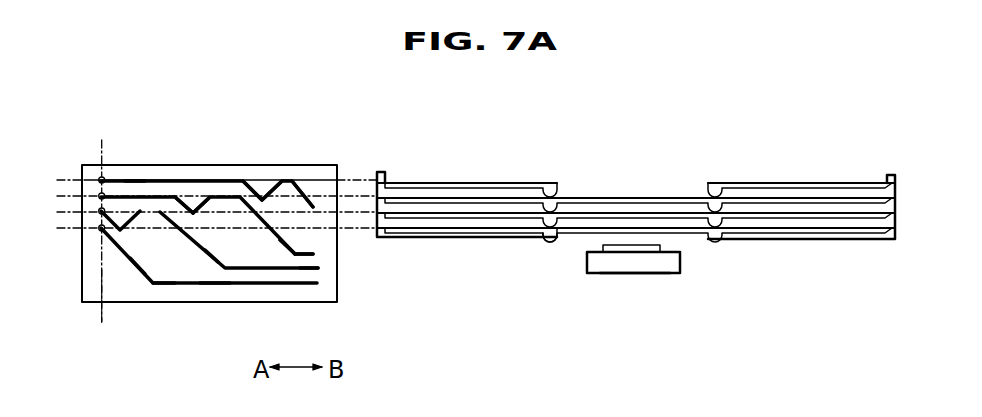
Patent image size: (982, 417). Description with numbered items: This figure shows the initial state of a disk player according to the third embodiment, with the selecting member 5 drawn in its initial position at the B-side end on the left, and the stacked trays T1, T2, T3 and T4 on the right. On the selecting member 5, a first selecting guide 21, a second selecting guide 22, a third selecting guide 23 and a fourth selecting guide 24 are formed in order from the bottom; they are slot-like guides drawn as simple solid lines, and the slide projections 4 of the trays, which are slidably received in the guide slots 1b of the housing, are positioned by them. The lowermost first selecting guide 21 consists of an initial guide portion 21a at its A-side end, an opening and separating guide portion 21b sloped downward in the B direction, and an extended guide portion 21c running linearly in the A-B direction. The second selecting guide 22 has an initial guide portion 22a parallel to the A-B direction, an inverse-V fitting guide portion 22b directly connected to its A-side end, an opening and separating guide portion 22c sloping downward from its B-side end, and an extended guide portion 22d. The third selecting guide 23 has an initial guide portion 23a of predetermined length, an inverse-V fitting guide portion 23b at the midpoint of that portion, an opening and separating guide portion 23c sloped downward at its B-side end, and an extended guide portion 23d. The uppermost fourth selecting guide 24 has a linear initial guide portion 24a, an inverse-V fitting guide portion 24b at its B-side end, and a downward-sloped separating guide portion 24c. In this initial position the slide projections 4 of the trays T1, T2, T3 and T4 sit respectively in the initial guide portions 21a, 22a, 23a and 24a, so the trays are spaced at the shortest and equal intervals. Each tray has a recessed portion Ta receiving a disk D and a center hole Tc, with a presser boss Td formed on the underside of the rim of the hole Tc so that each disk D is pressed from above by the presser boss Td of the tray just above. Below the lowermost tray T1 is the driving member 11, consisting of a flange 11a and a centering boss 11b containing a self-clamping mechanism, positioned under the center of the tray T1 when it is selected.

The fourth selecting guide 24 is at (105, 178).
The third selecting guide 23 is at (100, 195).
The initial guide portion 22a is at (99, 211).
The slide projection 4 is at (83, 237).
The initial guide portion 21a is at (81, 266).
The guide slot 1b is at (100, 279).
The first selecting guide 21 is at (120, 265).
The inverse-V fitting guide portion 22b is at (138, 264).
The second selecting guide 22 is at (160, 222).
The opening and separating guide portion 22c is at (212, 258).
The opening and separating guide portion 21b is at (152, 287).
The extended guide portion 21c is at (215, 286).
The selecting member 5 is at (338, 303).
The extended guide portion 23d is at (312, 256).
The extended guide portion 22d is at (308, 289).
The initial guide portion 23a is at (135, 180).
The inverse-V fitting guide portion 23b is at (205, 195).
The opening and separating guide portion 23c is at (288, 235).
The initial guide portion 24a is at (176, 194).
The inverse-V fitting guide portion 24b is at (262, 198).
The separating guide portion 24c is at (313, 196).
The tray T2 is at (426, 210).
The tray T3 is at (482, 202).
The tray T4 is at (530, 182).
The tray T1 is at (473, 238).
The disk D is at (634, 222).
The recessed portion Ta is at (448, 238).
The presser boss Td is at (543, 243).
The hole Tc is at (562, 243).
The driving member 11 is at (660, 280).
The flange 11a is at (678, 248).
The boss 11b is at (625, 243).